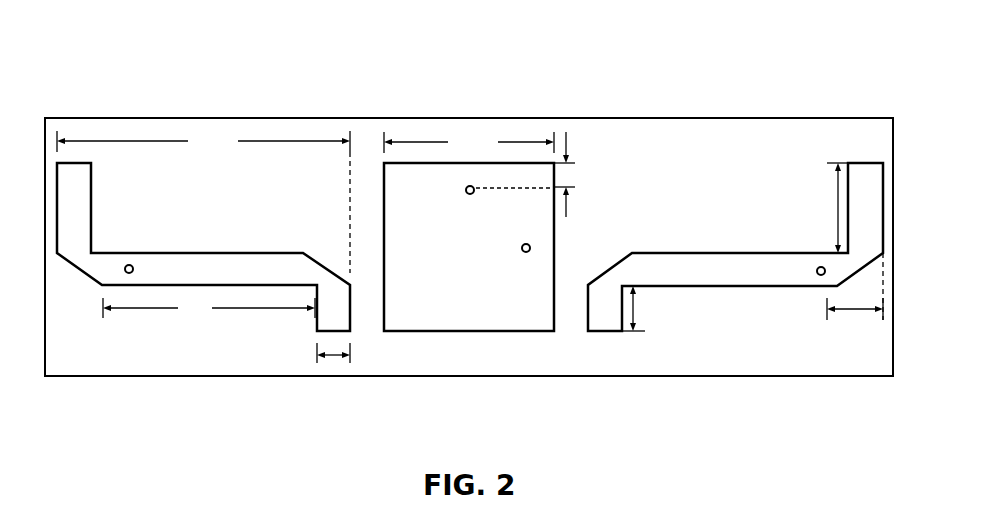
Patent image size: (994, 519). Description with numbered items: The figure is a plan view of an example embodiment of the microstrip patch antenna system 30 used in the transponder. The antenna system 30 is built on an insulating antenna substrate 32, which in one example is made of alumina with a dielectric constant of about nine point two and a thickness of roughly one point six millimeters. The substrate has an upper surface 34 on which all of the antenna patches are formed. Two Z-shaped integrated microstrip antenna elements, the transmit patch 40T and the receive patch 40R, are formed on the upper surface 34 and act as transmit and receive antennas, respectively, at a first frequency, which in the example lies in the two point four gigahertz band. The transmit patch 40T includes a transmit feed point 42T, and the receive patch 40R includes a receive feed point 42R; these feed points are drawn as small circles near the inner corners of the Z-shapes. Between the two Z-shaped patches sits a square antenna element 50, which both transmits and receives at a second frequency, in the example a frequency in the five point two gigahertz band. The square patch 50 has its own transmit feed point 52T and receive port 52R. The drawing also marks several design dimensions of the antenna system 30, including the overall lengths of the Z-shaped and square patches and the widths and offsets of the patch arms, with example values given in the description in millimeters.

The antenna system 30 is at (258, 80).
The antenna substrate 32 is at (702, 118).
The upper surface 34 is at (752, 152).
The receive antenna element 40R is at (213, 252).
The receive feed point 42R is at (133, 265).
The transmit antenna element 40T is at (700, 252).
The transmit feed point 42T is at (816, 265).
The square antenna element 50 is at (555, 264).
The receive port 52R is at (466, 194).
The transmit feed point 52T is at (521, 252).